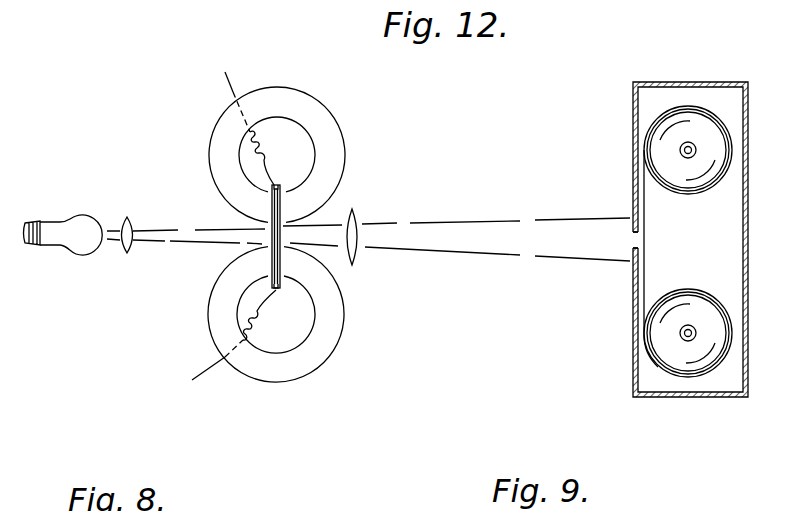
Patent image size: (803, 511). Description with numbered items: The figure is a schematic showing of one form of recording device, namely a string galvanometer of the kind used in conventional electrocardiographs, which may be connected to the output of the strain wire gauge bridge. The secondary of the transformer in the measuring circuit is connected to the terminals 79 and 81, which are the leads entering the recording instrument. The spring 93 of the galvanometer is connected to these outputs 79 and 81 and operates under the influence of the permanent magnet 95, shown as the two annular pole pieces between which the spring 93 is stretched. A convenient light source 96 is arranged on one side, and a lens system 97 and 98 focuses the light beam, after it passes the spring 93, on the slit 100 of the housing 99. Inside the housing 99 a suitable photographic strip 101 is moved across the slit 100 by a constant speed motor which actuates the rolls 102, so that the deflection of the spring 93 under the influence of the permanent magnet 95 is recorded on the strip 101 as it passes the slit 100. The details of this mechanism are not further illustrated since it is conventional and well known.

The terminal 79 is at (228, 88).
The terminal 81 is at (203, 372).
The spring 93 is at (262, 236).
The permanent magnet 95 is at (336, 168).
The light source 96 is at (80, 224).
The lens system 97 is at (130, 217).
The lens system 98 is at (355, 212).
The housing 99 is at (632, 148).
The slit 100 is at (632, 240).
The photographic strip 101 is at (648, 205).
The rolls 102 is at (681, 115).